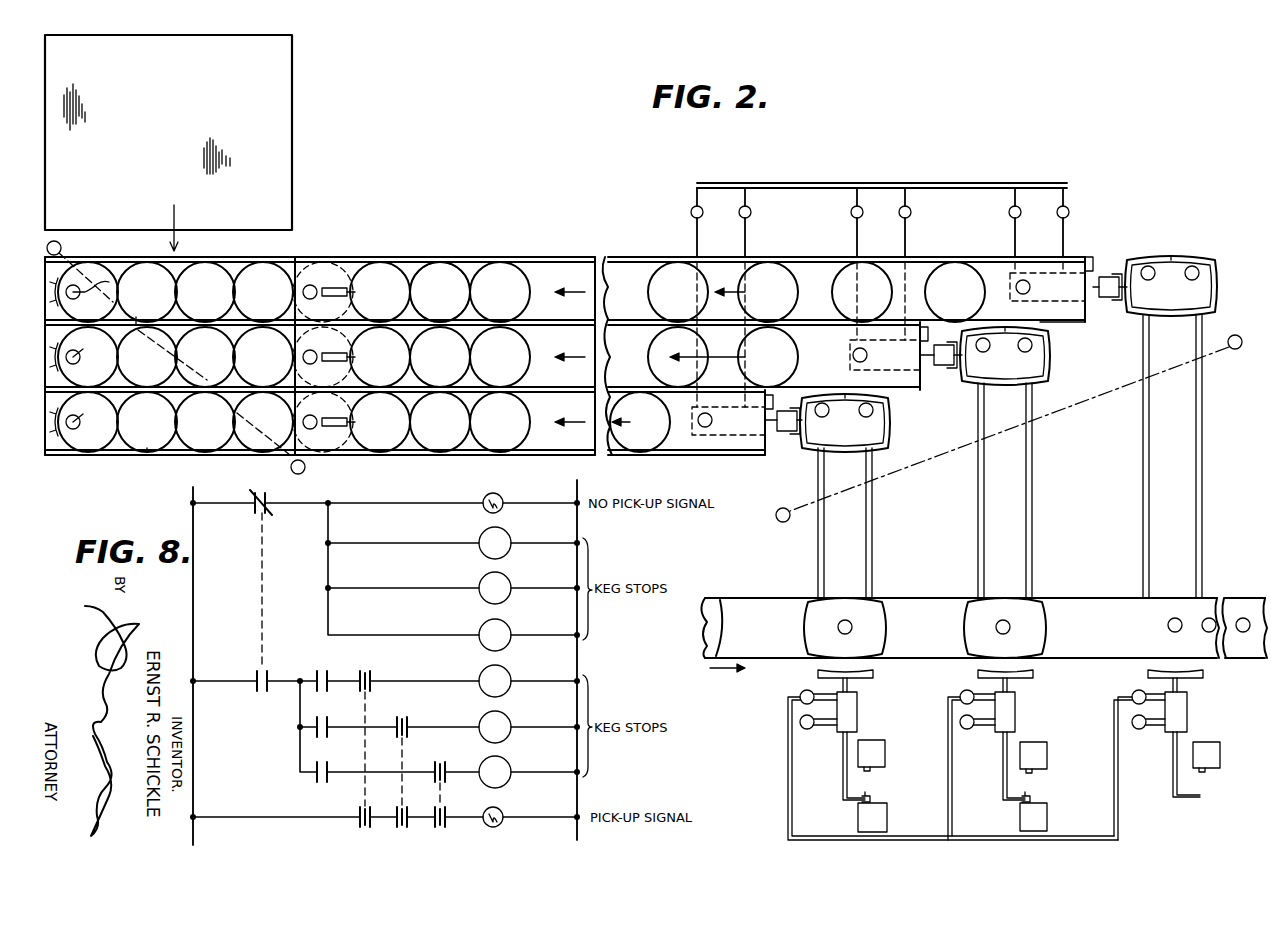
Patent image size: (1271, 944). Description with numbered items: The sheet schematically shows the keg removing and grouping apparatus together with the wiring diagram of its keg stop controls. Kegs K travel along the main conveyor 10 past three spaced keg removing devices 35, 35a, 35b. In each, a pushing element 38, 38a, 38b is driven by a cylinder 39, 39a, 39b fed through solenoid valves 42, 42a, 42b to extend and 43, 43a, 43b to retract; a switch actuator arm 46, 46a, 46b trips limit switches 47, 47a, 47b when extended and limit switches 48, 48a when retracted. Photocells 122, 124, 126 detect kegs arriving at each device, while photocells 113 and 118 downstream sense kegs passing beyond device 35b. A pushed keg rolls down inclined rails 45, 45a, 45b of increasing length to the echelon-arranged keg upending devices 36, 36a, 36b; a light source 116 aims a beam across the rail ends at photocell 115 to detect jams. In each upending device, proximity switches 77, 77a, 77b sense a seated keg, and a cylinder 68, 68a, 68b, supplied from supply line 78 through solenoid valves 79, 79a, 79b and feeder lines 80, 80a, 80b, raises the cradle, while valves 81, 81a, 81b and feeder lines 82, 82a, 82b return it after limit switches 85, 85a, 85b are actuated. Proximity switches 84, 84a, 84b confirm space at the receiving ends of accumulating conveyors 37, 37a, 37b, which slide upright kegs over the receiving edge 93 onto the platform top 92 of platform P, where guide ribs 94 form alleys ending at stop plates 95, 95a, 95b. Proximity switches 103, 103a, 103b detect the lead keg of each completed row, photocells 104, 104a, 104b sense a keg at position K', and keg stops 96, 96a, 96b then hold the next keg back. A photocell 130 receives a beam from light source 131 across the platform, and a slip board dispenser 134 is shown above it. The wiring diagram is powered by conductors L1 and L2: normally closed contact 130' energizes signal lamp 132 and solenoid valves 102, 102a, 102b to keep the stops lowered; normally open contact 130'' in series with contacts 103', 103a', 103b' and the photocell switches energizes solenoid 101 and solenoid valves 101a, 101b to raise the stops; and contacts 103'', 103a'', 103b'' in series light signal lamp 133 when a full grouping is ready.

In FIG. 2, the slip board dispenser 134 is at (294, 155).
In FIG. 2, the photocell 130 is at (80, 269).
In FIG. 2, the light source 131 is at (290, 466).
In FIG. 2, the guide ribs 94 is at (123, 441).
In FIG. 2, the receiving edge 93 is at (290, 255).
In FIG. 2, the platform top 92 is at (162, 460).
In FIG. 2, the platform P is at (232, 458).
In FIG. 2, the keg K is at (574, 413).
In FIG. 2, the keg position K' is at (323, 336).
In FIG. 2, the proximity switch 103 is at (82, 410).
In FIG. 2, the proximity switch 103a is at (81, 345).
In FIG. 2, the proximity switch 103b is at (110, 285).
In FIG. 2, the stop plate 95 is at (70, 428).
In FIG. 2, the stop plate 95a is at (70, 363).
In FIG. 2, the stop plate 95b is at (70, 298).
In FIG. 2, the photocell 104 is at (318, 411).
In FIG. 8, the photocell 104 is at (330, 668).
In FIG. 2, the photocell 104a is at (318, 346).
In FIG. 8, the photocell 104a is at (328, 709).
In FIG. 2, the photocell 104b is at (315, 286).
In FIG. 8, the photocell 104b is at (328, 754).
In FIG. 2, the keg stop 96 is at (368, 422).
In FIG. 2, the keg stop 96a is at (371, 357).
In FIG. 2, the keg stop 96b is at (372, 292).
In FIG. 2, the accumulating conveyor 37 is at (535, 456).
In FIG. 2, the accumulating conveyor 37a is at (895, 392).
In FIG. 2, the accumulating conveyor 37b is at (1057, 326).
In FIG. 2, the supply line 78 is at (981, 184).
In FIG. 2, the solenoid valve 79 is at (694, 208).
In FIG. 2, the solenoid valve 81 is at (752, 212).
In FIG. 2, the solenoid valve 79a is at (852, 210).
In FIG. 2, the solenoid valve 81a is at (912, 212).
In FIG. 2, the solenoid valve 79b is at (1010, 212).
In FIG. 2, the solenoid valve 81b is at (1070, 212).
In FIG. 2, the feeder line 80 is at (695, 241).
In FIG. 2, the feeder line 82 is at (752, 246).
In FIG. 2, the feeder line 80a is at (855, 243).
In FIG. 2, the feeder line 82a is at (912, 246).
In FIG. 2, the feeder line 80b is at (1013, 245).
In FIG. 2, the feeder line 82b is at (1070, 245).
In FIG. 2, the proximity switch 84 is at (700, 414).
In FIG. 2, the proximity switch 84a is at (854, 350).
In FIG. 2, the proximity switch 84b is at (1016, 285).
In FIG. 2, the cylinder 68 is at (690, 436).
In FIG. 2, the cylinder 68a is at (848, 368).
In FIG. 2, the cylinder 68b is at (1008, 300).
In FIG. 2, the limit switch 85 is at (776, 398).
In FIG. 2, the limit switch 85a is at (938, 335).
In FIG. 2, the limit switch 85b is at (1097, 262).
In FIG. 2, the proximity switches 77 is at (858, 426).
In FIG. 2, the proximity switches 77a is at (1017, 361).
In FIG. 2, the proximity switches 77b is at (1184, 289).
In FIG. 2, the keg upending device 36 is at (808, 453).
In FIG. 2, the keg upending device 36a is at (966, 390).
In FIG. 2, the keg upending device 36b is at (1126, 320).
In FIG. 2, the inclined rails 45 is at (826, 538).
In FIG. 2, the inclined rails 45a is at (986, 492).
In FIG. 2, the inclined rails 45b is at (1151, 470).
In FIG. 2, the light source 116 is at (1242, 337).
In FIG. 2, the photocell 115 is at (780, 522).
In FIG. 2, the photocell 122 is at (838, 627).
In FIG. 2, the photocell 124 is at (996, 627).
In FIG. 2, the photocell 126 is at (1170, 630).
In FIG. 2, the photocell 113 is at (1210, 618).
In FIG. 2, the photocell 118 is at (1243, 618).
In FIG. 2, the main conveyor 10 is at (781, 668).
In FIG. 2, the keg removing device 35 is at (933, 752).
In FIG. 2, the keg removing device 35a is at (994, 752).
In FIG. 2, the keg removing device 35b is at (1170, 752).
In FIG. 2, the pushing element 38 is at (876, 672).
In FIG. 2, the pushing element 38a is at (1036, 672).
In FIG. 2, the pushing element 38b is at (1206, 672).
In FIG. 2, the cylinder 39 is at (857, 720).
In FIG. 2, the cylinder 39a is at (1015, 722).
In FIG. 2, the cylinder 39b is at (1187, 716).
In FIG. 2, the solenoid valve 42 is at (800, 726).
In FIG. 2, the solenoid valve 42a is at (960, 726).
In FIG. 2, the solenoid valve 42b is at (1132, 726).
In FIG. 2, the solenoid valve 43 is at (800, 700).
In FIG. 2, the solenoid valve 43a is at (960, 700).
In FIG. 2, the solenoid valve 43b is at (1132, 700).
In FIG. 2, the switch actuator arm 46 is at (870, 797).
In FIG. 2, the switch actuator arm 46a is at (1030, 797).
In FIG. 2, the switch actuator arm 46b is at (1195, 790).
In FIG. 2, the limit switch 47 is at (876, 755).
In FIG. 2, the limit switch 47a is at (1038, 757).
In FIG. 2, the limit switch 47b is at (1212, 752).
In FIG. 2, the limit switch 48 is at (884, 817).
In FIG. 2, the limit switch 48a is at (1044, 817).
In FIG. 8, the conductor L1 is at (586, 654).
In FIG. 8, the conductor L2 is at (204, 661).
In FIG. 8, the normally closed contact 130' is at (282, 497).
In FIG. 8, the normally open contact 130'' is at (283, 602).
In FIG. 8, the proximity switch contact 103' is at (384, 726).
In FIG. 8, the proximity switch contact 103a' is at (419, 749).
In FIG. 8, the proximity switch contact 103b' is at (449, 771).
In FIG. 8, the proximity switch contact 103'' is at (354, 828).
In FIG. 8, the proximity switch contact 103a'' is at (413, 830).
In FIG. 8, the proximity switch contact 103b'' is at (473, 826).
In FIG. 8, the signal lamp 132 is at (500, 496).
In FIG. 8, the signal lamp 133 is at (500, 810).
In FIG. 8, the solenoid valve 102 is at (507, 531).
In FIG. 8, the solenoid valve 102a is at (507, 576).
In FIG. 8, the solenoid valve 102b is at (507, 623).
In FIG. 8, the solenoid 101 is at (507, 669).
In FIG. 8, the solenoid valve 101a is at (507, 715).
In FIG. 8, the solenoid valve 101b is at (507, 760).